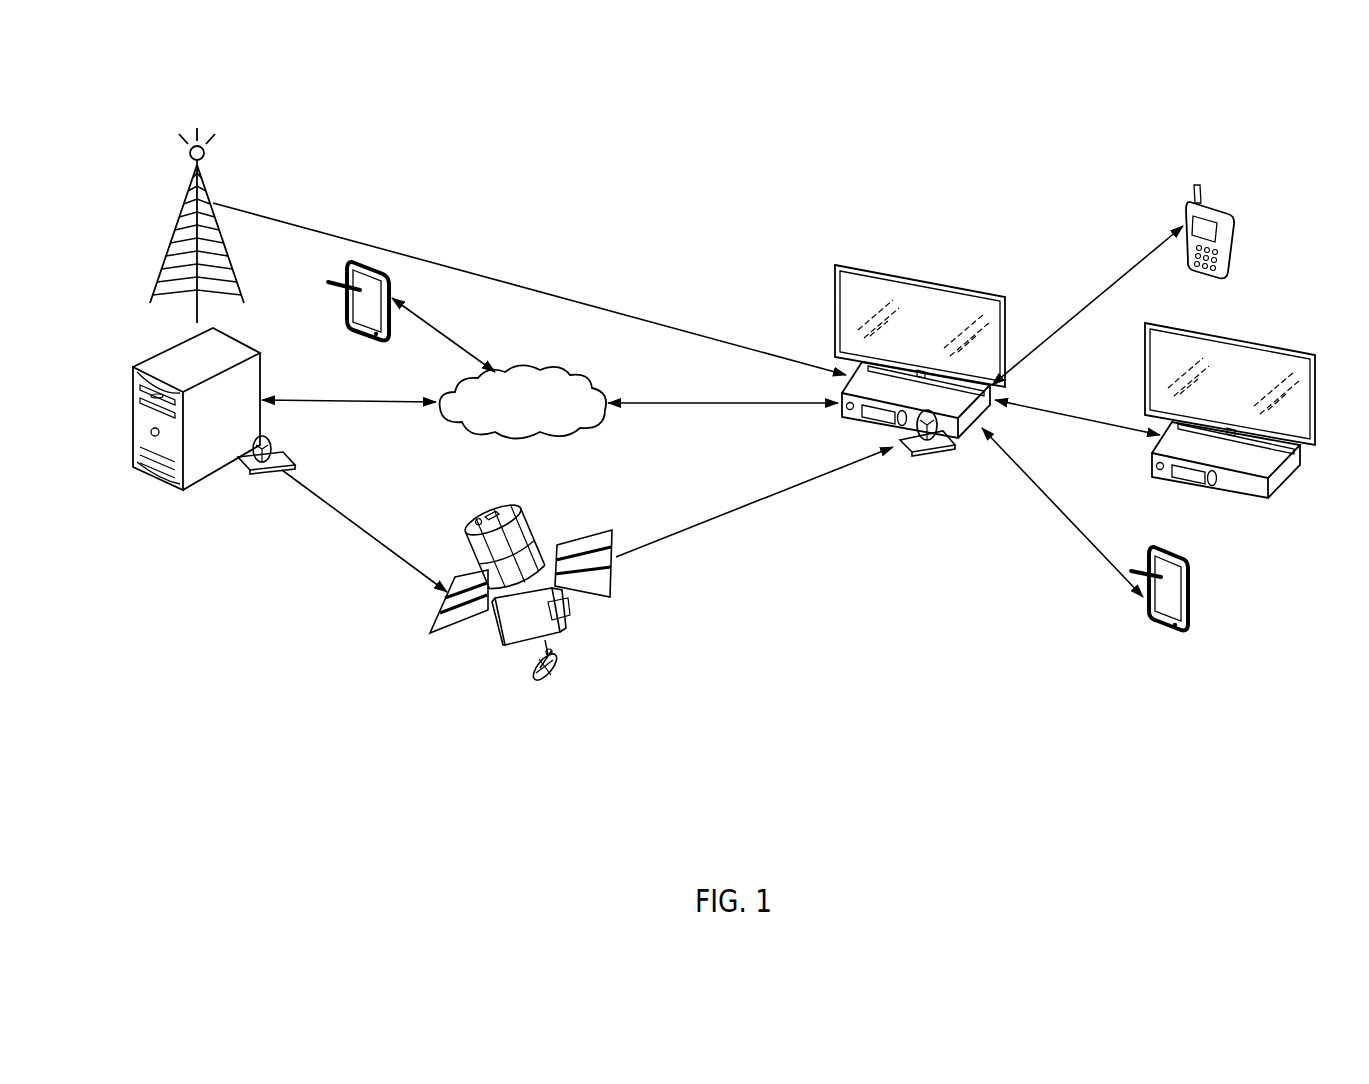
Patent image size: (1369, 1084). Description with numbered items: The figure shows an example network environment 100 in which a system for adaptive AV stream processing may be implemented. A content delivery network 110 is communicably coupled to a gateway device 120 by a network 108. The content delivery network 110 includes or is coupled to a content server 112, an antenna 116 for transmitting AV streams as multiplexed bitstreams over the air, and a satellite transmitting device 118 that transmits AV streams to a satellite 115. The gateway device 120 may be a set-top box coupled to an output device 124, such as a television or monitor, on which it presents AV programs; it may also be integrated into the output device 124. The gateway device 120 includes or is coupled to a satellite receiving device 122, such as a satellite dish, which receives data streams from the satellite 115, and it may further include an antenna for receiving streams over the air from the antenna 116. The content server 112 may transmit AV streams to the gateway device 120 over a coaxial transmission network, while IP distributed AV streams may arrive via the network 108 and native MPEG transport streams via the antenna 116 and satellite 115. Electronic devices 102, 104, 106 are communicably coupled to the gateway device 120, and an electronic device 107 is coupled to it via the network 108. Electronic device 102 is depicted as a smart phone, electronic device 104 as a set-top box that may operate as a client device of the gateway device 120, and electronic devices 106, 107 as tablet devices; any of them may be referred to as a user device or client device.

The network environment 100 is at (946, 124).
The electronic device 102 is at (1238, 237).
The electronic device 104 is at (1284, 469).
The electronic device 106 is at (1190, 609).
The electronic device 107 is at (345, 265).
The network 108 is at (553, 437).
The content delivery network 110 is at (140, 502).
The content server 112 is at (133, 402).
The satellite 115 is at (567, 617).
The antenna 116 is at (172, 238).
The satellite transmitting device 118 is at (275, 446).
The gateway device 120 is at (973, 411).
The satellite receiving device 122 is at (917, 451).
The output device 124 is at (942, 286).